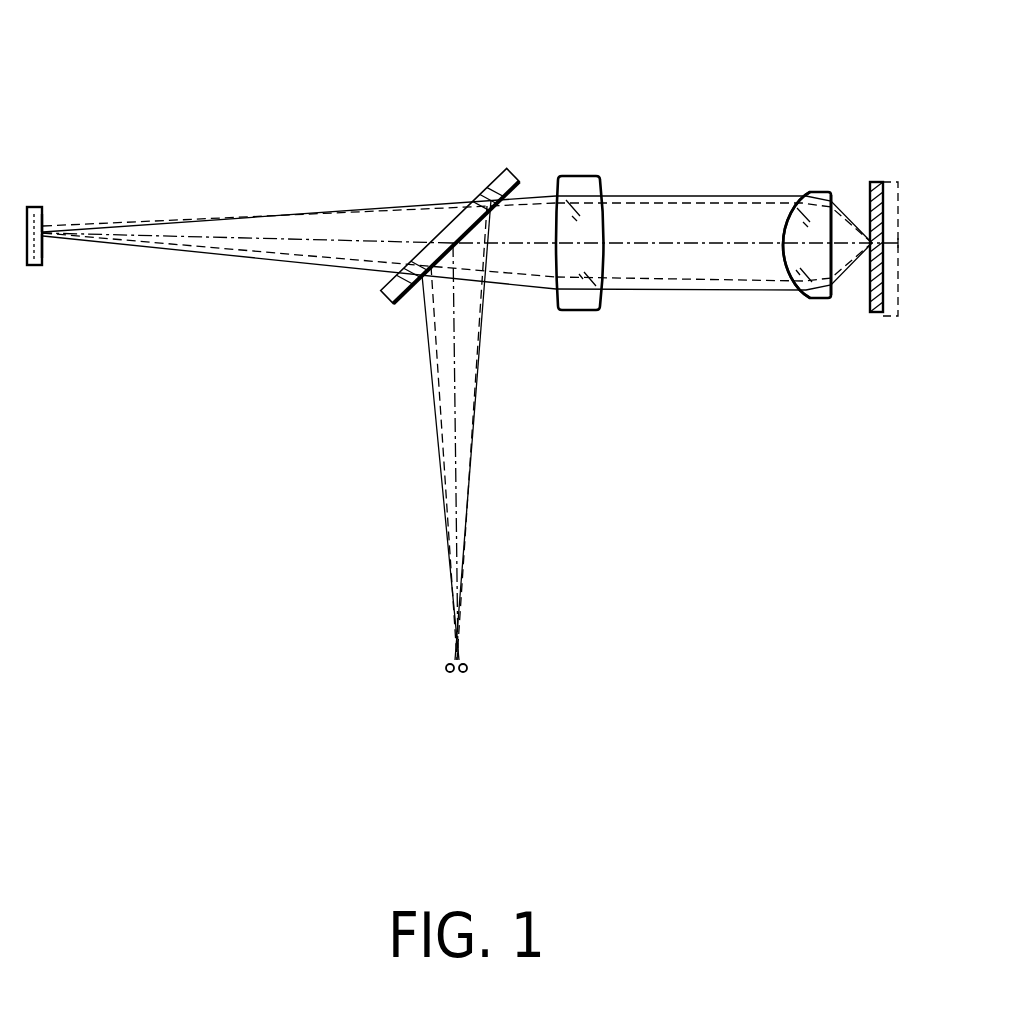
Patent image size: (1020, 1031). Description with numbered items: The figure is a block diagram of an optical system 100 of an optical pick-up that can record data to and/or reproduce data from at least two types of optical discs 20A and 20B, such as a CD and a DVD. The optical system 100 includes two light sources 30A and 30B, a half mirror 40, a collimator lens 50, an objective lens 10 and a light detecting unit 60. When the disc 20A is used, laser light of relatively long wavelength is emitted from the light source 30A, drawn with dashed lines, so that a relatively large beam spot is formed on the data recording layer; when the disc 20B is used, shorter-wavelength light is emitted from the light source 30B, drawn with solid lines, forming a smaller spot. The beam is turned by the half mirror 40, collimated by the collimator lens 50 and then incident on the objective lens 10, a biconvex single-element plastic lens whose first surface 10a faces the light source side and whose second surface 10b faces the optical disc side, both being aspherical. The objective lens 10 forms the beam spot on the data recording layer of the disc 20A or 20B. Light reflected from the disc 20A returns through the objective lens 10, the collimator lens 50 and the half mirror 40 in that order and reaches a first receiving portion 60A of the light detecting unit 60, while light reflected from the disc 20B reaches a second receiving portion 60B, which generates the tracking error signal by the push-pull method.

The optical system 100 is at (354, 78).
The objective lens 10 is at (822, 192).
The first surface 10a is at (803, 200).
The second surface 10b is at (833, 202).
The optical disc 20A is at (897, 318).
The optical disc 20B is at (870, 309).
The light source 30A is at (467, 670).
The light source 30B is at (448, 672).
The half mirror 40 is at (386, 300).
The collimator lens 50 is at (578, 180).
The light detecting unit 60 is at (30, 207).
The first receiving portion 60A is at (50, 226).
The second receiving portion 60B is at (46, 236).